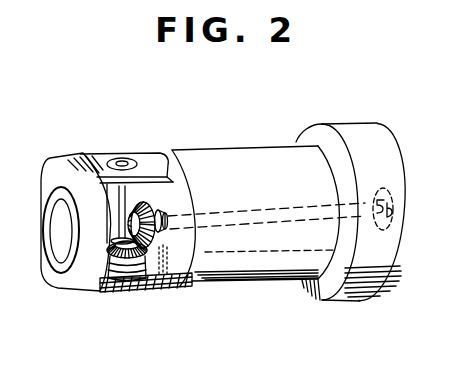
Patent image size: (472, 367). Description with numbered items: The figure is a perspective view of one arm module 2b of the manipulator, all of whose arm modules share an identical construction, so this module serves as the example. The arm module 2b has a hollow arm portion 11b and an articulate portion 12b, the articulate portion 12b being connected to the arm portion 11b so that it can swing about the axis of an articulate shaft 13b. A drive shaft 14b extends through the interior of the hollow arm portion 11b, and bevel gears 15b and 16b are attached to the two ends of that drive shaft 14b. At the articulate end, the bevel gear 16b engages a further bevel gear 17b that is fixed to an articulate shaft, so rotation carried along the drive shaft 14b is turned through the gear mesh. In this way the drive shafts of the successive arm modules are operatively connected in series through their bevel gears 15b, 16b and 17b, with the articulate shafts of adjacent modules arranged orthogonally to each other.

The arm module 2b is at (193, 284).
The hollow arm portion 11b is at (240, 163).
The articulate portion 12b is at (75, 156).
The articulate shaft 13b is at (124, 162).
The drive shaft 14b is at (236, 214).
The bevel gear 15b is at (400, 218).
The bevel gear 16b is at (150, 205).
The bevel gear 17b is at (133, 262).